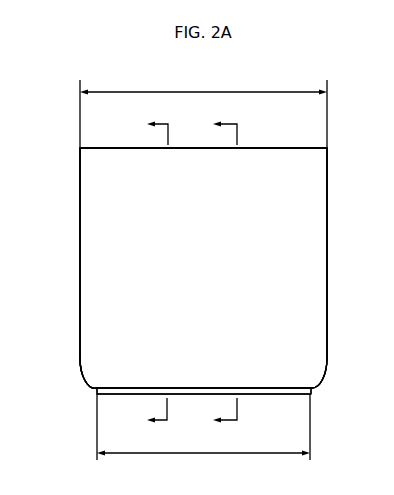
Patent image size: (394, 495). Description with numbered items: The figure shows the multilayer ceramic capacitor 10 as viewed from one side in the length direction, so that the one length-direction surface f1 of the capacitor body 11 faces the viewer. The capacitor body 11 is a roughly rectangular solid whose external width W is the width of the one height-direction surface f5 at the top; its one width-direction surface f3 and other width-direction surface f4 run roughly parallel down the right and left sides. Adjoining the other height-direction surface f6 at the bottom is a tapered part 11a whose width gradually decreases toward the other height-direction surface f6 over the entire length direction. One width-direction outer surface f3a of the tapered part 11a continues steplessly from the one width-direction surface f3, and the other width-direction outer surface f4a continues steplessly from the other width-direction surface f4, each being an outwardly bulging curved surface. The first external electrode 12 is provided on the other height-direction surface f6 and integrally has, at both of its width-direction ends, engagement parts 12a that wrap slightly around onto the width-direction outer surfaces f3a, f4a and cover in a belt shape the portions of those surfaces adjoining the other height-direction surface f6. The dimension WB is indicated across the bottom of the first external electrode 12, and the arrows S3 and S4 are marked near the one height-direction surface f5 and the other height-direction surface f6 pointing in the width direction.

The multilayer ceramic capacitor 10 is at (74, 170).
The capacitor body 11 is at (80, 228).
The first external electrode 12 is at (195, 398).
The tapered part 11a is at (82, 371).
The engagement parts 12a is at (93, 393).
The one length-direction surface f1 is at (120, 305).
The one width-direction surface f3 is at (327, 272).
The other width-direction surface f4 is at (80, 272).
The one height-direction surface f5 is at (194, 148).
The other height-direction surface f6 is at (254, 396).
The one width-direction outer surface of the tapered part f3a is at (318, 383).
The other width-direction outer surface of the tapered part f4a is at (90, 385).
The direction toward right side S3 is at (227, 272).
The direction toward left side S4 is at (159, 272).
The width W is at (203, 111).
The width of bottom plate WB is at (203, 433).